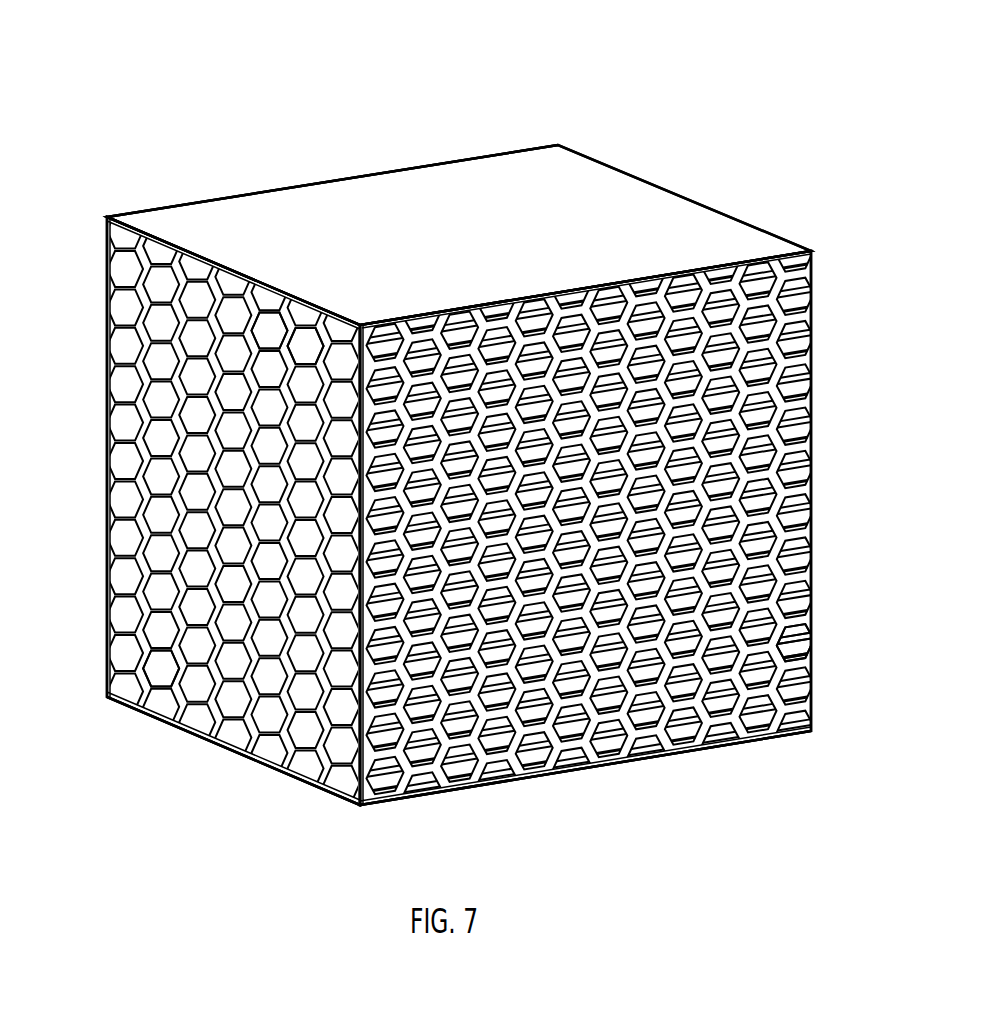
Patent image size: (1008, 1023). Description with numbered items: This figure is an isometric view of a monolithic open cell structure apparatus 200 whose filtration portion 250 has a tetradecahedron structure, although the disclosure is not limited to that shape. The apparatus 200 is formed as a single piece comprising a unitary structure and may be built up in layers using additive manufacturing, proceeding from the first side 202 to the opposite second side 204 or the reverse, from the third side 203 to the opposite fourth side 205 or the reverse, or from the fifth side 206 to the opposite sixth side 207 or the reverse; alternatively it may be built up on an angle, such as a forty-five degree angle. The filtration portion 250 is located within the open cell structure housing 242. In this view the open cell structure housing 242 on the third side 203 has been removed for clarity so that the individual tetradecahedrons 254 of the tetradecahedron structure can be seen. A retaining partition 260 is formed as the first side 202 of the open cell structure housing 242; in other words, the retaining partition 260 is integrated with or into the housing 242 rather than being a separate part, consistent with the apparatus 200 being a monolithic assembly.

The monolithic open cell structure apparatus 200 is at (90, 93).
The first side 202 is at (513, 790).
The third side 203 is at (163, 678).
The second side 204 is at (92, 682).
The fourth side 205 is at (827, 333).
The fifth side 206 is at (313, 182).
The sixth side 207 is at (317, 790).
The open cell structure housing 242 is at (572, 240).
The filtration portion 250 is at (312, 353).
The tetradecahedrons 254 is at (282, 327).
The retaining partition 260 is at (795, 637).